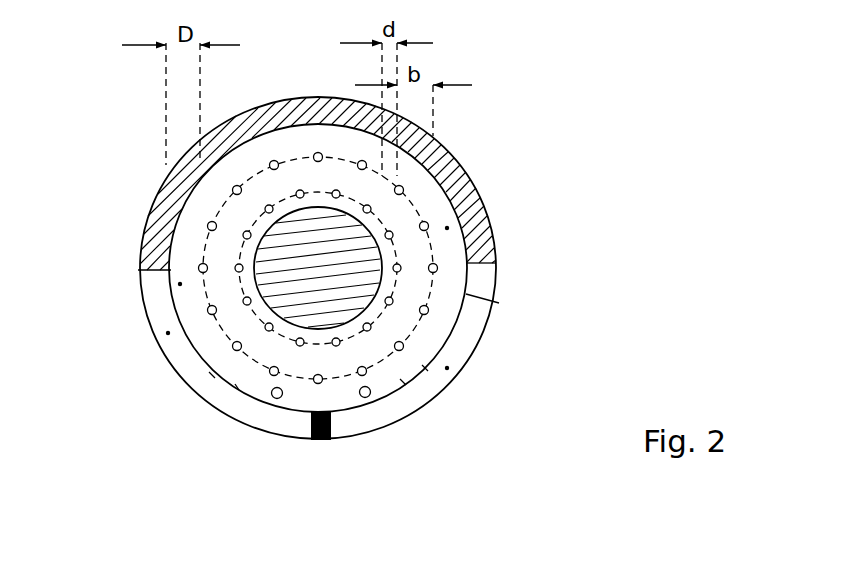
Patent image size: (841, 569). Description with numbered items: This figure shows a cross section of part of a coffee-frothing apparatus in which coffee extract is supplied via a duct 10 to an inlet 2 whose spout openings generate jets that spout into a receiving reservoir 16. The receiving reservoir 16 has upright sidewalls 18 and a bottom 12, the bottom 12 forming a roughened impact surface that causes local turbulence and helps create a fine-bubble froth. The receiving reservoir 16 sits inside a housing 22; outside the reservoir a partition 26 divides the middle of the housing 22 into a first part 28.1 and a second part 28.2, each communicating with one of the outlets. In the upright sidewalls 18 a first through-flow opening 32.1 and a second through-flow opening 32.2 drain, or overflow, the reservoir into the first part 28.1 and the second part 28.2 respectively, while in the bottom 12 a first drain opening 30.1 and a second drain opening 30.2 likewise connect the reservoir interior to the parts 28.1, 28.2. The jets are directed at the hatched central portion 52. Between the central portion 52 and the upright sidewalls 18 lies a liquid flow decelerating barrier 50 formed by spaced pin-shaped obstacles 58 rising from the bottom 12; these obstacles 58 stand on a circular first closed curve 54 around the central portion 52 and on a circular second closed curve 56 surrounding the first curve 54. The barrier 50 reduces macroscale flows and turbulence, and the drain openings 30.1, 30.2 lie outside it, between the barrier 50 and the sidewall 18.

The inlet 2 is at (497, 276).
The duct 10 is at (367, 192).
The bottom 12 is at (447, 228).
The receiving reservoir 16 is at (180, 284).
The upright sidewalls 18 is at (467, 237).
The housing 22 is at (487, 332).
The partition 26 is at (322, 440).
The first part 28.1 is at (250, 304).
The second part 28.2 is at (447, 368).
The first drain opening 30.1 is at (275, 398).
The second drain opening 30.2 is at (367, 398).
The first through-flow opening 32.1 is at (216, 388).
The second through-flow opening 32.2 is at (423, 385).
The liquid flow decelerating barrier 50 is at (318, 153).
The central portion 52 is at (318, 268).
The first closed curve 54 is at (238, 295).
The second closed curve 56 is at (445, 345).
The obstacles 58 is at (300, 190).